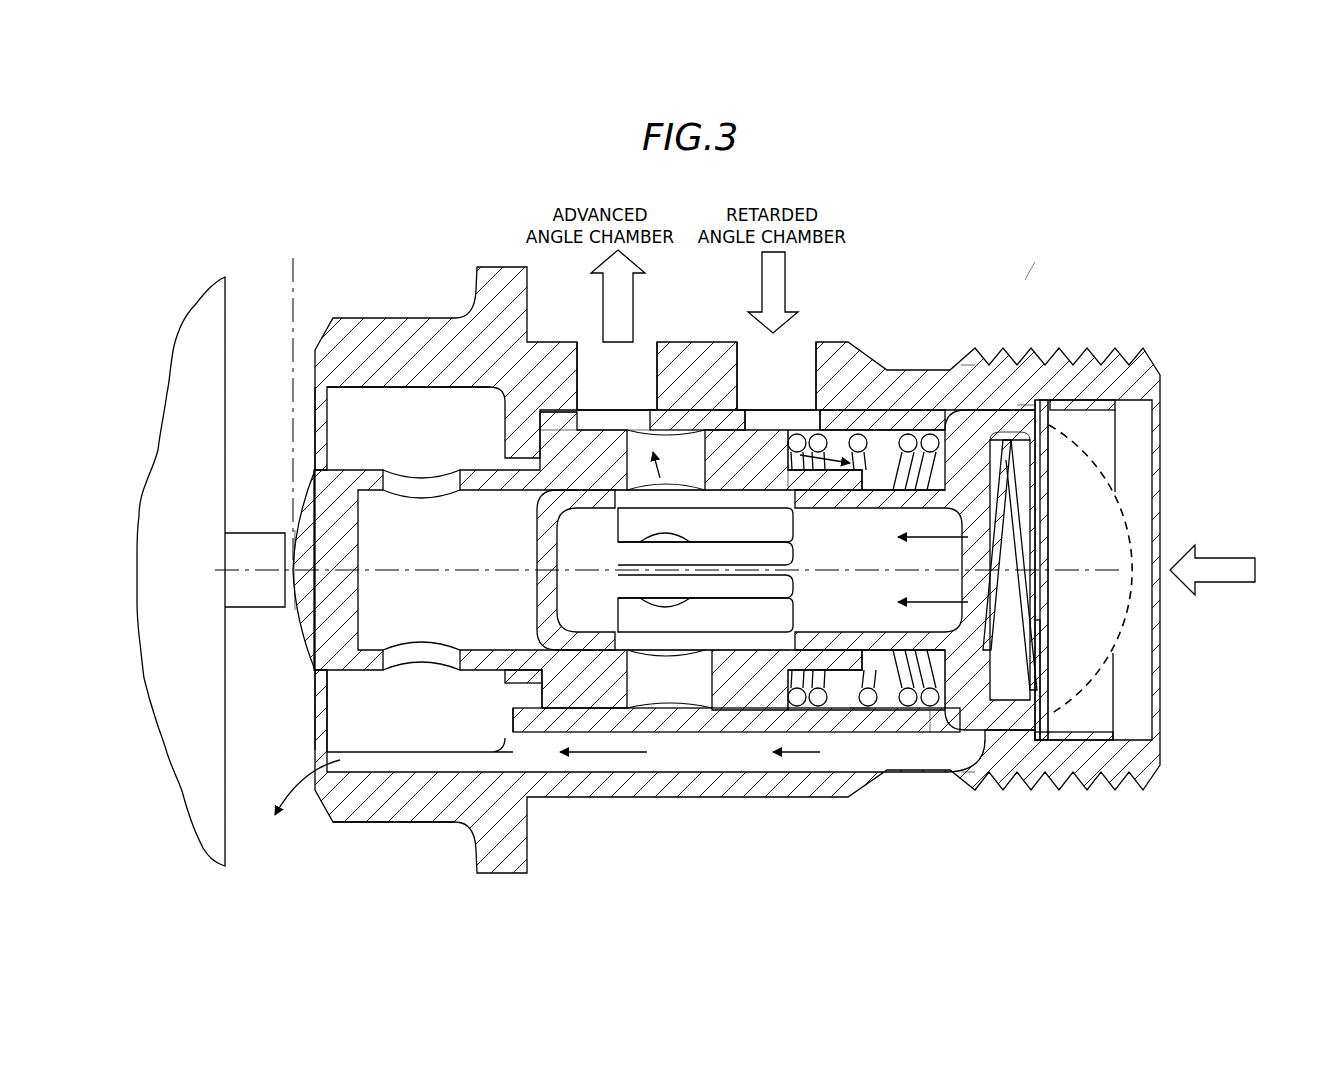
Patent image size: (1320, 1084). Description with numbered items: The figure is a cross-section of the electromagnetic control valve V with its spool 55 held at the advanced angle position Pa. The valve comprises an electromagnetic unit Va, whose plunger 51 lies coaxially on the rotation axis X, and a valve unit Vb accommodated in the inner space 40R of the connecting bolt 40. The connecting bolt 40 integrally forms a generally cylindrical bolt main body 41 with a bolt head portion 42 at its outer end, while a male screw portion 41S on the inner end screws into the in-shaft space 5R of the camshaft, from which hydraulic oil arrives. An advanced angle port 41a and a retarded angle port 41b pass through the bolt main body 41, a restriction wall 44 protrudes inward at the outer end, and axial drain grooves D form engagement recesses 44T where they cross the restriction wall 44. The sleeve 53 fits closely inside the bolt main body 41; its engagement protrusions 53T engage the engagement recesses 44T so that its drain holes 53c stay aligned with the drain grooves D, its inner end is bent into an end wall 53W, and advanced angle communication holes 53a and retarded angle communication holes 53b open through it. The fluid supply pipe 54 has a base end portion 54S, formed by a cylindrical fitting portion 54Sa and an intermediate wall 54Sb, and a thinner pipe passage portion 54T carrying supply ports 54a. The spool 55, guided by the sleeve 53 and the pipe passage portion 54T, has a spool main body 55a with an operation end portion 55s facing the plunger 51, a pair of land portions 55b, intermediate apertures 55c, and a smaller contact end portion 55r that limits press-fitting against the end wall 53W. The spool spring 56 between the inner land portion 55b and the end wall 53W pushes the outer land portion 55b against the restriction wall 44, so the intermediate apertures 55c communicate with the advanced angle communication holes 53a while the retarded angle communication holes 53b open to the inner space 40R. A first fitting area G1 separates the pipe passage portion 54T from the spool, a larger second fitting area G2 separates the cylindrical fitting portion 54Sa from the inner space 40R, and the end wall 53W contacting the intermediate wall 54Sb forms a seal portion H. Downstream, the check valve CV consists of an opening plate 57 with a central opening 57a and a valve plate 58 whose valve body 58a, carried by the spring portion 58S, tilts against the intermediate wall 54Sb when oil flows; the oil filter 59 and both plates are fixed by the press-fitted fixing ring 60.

The connecting bolt 40 is at (383, 316).
The bolt main body 41 is at (705, 342).
The advanced angle port 41a is at (640, 344).
The retarded angle port 41b is at (805, 342).
The male screw portion 41S is at (1113, 343).
The bolt head portion 42 is at (380, 824).
The restriction wall 44 is at (505, 433).
The engagement recess 44T is at (505, 696).
The plunger 51 is at (253, 530).
The sleeve 53 is at (690, 733).
The advanced angle communication hole 53a is at (612, 405).
The retarded angle communication hole 53b is at (765, 405).
The drain hole 53c is at (860, 705).
The engagement protrusion 53T is at (523, 735).
The end wall 53W is at (893, 480).
The fluid supply pipe 54 is at (538, 550).
The supply port 54a is at (800, 590).
The base end portion 54S is at (1025, 742).
The cylindrical fitting portion 54Sa is at (1044, 720).
The intermediate wall 54Sb is at (1042, 670).
The pipe passage portion 54T is at (930, 735).
The spool 55 is at (305, 648).
The spool main body 55a is at (505, 680).
The land portion 55b is at (565, 438).
The intermediate aperture 55c is at (667, 478).
The contact end portion 55r is at (882, 468).
The operation end portion 55s is at (297, 612).
The spool spring 56 is at (808, 700).
The opening plate 57 is at (1052, 455).
The opening 57a is at (1050, 588).
The valve plate 58 is at (962, 412).
The valve body 58a is at (988, 590).
The spring portion 58S is at (1010, 540).
The oil filter 59 is at (1130, 523).
The fixing ring 60 is at (1095, 408).
The electromagnetic unit Va is at (197, 300).
The advanced angle position Pa is at (291, 395).
The rotation axis X is at (656, 571).
The electromagnetic control valve V is at (1030, 262).
The first fitting area G1 is at (824, 490).
The second fitting area G2 is at (1017, 405).
The seal portion H is at (967, 465).
The drain groove D is at (637, 762).
The check valve CV is at (1068, 620).
The valve unit Vb is at (933, 735).
The in-shaft space 5R is at (1234, 476).
The inner space 40R is at (962, 722).